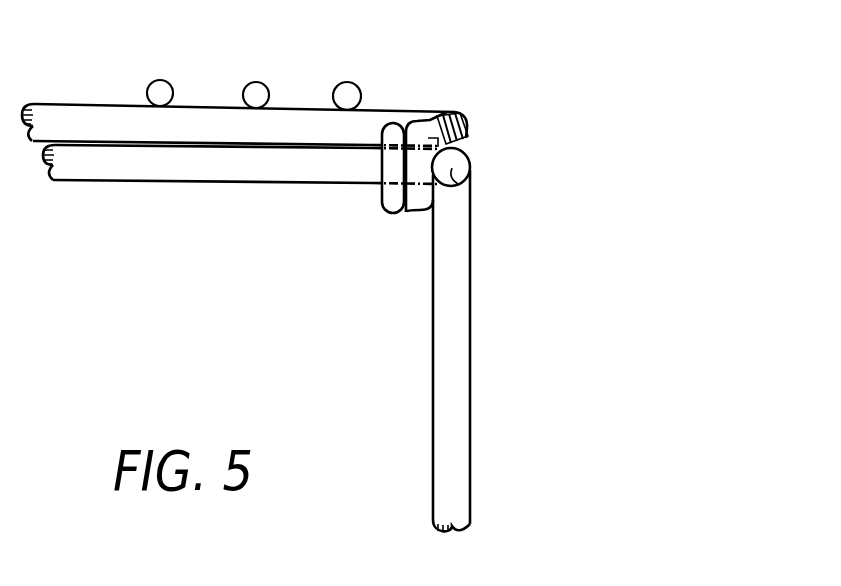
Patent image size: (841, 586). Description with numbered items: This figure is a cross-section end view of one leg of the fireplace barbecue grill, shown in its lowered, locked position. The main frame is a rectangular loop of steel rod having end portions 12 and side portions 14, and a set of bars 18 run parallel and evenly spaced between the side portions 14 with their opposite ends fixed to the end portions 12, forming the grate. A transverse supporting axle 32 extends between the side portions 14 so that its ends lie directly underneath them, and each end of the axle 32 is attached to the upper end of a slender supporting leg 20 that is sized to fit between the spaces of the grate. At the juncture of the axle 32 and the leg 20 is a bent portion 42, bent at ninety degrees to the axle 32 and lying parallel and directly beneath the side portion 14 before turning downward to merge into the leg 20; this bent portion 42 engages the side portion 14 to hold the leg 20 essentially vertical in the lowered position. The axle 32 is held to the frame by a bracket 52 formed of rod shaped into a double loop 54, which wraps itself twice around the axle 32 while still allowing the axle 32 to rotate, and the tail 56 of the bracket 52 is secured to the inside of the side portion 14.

The end portion 12 is at (105, 122).
The bars 18 is at (164, 80).
The transverse supporting axle 32 is at (160, 165).
The bracket 52 is at (412, 110).
The tail 56 is at (428, 110).
The side portion 14 is at (473, 146).
The bent portion 42 is at (458, 183).
The double loop 54 is at (420, 222).
The supporting leg 20 is at (445, 308).